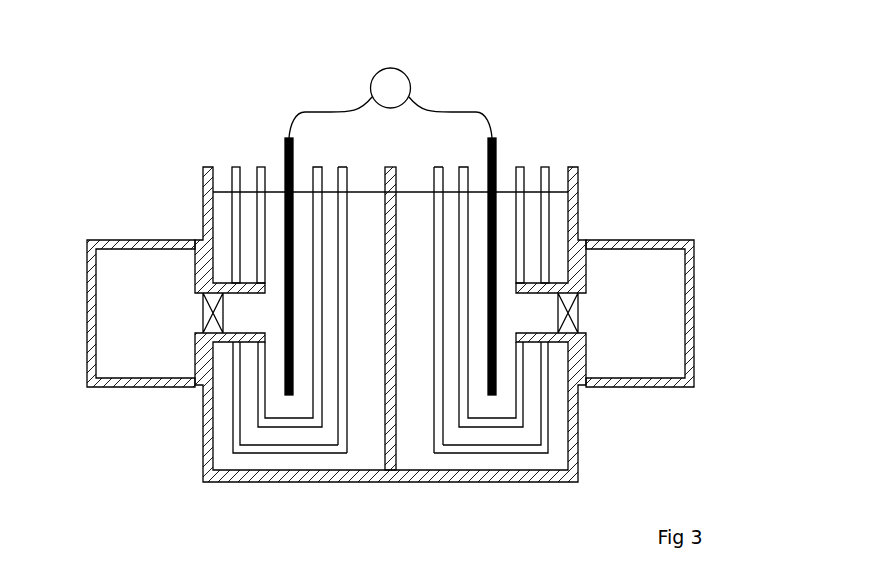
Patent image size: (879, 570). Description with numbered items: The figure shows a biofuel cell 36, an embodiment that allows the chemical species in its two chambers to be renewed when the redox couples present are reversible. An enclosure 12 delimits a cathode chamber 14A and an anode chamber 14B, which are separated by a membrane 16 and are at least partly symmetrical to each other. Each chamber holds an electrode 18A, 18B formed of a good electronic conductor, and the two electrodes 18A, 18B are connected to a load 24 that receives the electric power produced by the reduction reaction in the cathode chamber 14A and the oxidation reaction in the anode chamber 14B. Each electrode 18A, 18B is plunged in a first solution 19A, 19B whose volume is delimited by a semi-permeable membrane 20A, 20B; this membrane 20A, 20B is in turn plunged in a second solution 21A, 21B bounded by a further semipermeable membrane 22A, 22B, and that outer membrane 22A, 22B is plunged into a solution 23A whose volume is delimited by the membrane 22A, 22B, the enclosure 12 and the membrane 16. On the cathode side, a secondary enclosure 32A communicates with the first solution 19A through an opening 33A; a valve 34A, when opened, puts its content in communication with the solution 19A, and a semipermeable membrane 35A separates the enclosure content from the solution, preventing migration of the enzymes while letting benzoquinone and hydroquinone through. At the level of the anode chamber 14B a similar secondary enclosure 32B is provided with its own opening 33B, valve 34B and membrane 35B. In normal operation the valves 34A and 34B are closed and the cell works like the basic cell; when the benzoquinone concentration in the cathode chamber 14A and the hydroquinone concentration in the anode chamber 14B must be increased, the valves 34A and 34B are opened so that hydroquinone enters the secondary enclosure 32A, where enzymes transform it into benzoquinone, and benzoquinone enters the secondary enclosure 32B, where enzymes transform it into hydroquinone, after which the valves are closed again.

The enclosure 12 is at (580, 218).
The cathode chamber 14A is at (273, 458).
The anode chamber 14B is at (499, 457).
The membrane 16 is at (397, 463).
The electrode 18A is at (285, 140).
The electrode 18B is at (497, 145).
The first solution 19A is at (302, 192).
The first solution 19B is at (480, 198).
The semi-permeable membrane 20A is at (258, 167).
The semi-permeable membrane 20B is at (519, 167).
The second solution 21A is at (326, 200).
The second solution 21B is at (452, 197).
The semipermeable membrane 22A is at (233, 167).
The semipermeable membrane 22B is at (548, 437).
The solution 23A is at (322, 463).
The load 24 is at (411, 73).
The secondary enclosure 32A is at (115, 382).
The secondary enclosure 32B is at (657, 240).
The opening 33A is at (250, 342).
The opening 33B is at (528, 283).
The valve 34A is at (218, 283).
The valve 34B is at (560, 335).
The semipermeable membrane 35A is at (203, 307).
The membrane 35B is at (580, 313).
The biofuel cell 36 is at (603, 83).